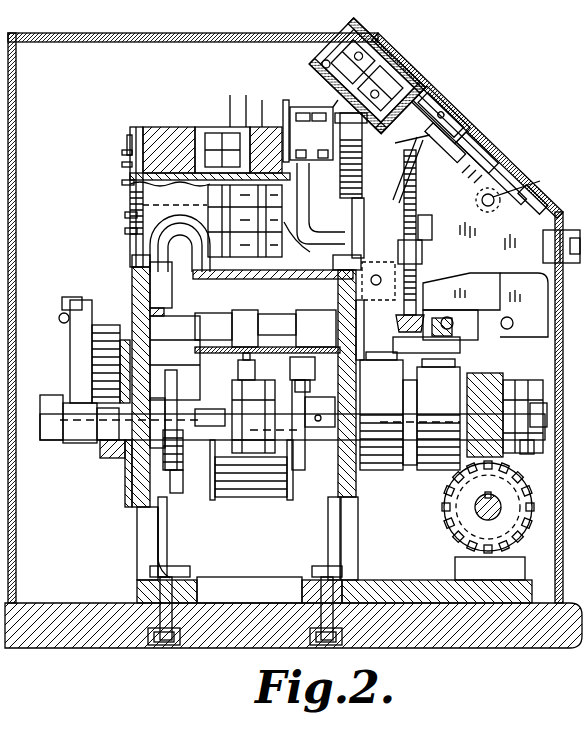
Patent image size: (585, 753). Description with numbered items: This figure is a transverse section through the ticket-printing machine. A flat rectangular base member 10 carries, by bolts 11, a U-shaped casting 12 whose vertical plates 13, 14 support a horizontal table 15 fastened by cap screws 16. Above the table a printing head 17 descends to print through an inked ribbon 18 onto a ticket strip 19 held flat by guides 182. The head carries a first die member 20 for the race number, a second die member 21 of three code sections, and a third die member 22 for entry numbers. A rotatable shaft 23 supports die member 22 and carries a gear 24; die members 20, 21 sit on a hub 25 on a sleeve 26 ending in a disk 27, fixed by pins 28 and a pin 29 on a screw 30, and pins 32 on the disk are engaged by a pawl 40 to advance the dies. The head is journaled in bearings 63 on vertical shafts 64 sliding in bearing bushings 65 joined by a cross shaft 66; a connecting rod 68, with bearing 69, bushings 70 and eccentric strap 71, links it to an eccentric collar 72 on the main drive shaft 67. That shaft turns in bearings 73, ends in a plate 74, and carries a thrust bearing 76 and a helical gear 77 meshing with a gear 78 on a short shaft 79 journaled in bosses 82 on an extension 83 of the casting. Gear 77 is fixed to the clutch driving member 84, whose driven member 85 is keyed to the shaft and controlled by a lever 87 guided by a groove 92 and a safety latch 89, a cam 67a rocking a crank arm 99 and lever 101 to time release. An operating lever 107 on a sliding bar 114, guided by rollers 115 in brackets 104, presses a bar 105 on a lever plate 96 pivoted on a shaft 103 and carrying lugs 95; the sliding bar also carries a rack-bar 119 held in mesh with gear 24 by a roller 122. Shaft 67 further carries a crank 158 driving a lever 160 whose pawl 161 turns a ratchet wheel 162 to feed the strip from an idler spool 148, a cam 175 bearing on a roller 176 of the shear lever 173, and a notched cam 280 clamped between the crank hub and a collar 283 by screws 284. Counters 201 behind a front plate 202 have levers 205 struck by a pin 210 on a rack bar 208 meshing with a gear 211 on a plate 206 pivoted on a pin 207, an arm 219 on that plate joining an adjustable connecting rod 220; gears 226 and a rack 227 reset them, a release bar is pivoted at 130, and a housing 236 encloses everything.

The base member 10 is at (433, 648).
The bolts 11 is at (183, 572).
The U-shaped casting 12 is at (152, 542).
The plate 13 is at (140, 512).
The plate 14 is at (358, 488).
The table 15 is at (132, 268).
The cap screws 16 is at (166, 253).
The printing head 17 is at (302, 110).
The inked ribbon 18 is at (216, 127).
The ticket strip 19 is at (220, 310).
The first die member 20 is at (230, 127).
The second die member 21 is at (262, 127).
The third die member 22 is at (285, 112).
The rotatable shaft 23 is at (140, 187).
The gear 24 is at (338, 196).
The hub 25 is at (176, 145).
The sleeve 26 is at (150, 150).
The disk 27 is at (122, 152).
The pins 28 is at (190, 128).
The pin 29 is at (246, 127).
The screw 30 is at (207, 127).
The pins 32 is at (122, 182).
The pawl 40 is at (128, 136).
The bearings 63 is at (125, 214).
The vertically extending shafts 64 is at (125, 231).
The bearing bushings 65 is at (150, 288).
The cross shaft 66 is at (185, 414).
The main drive shaft 67 is at (561, 408).
The cam 67a is at (300, 478).
The connecting rod 68 is at (234, 368).
The bearing 69 is at (267, 331).
The bushings 70 is at (225, 308).
The eccentric strap 71 is at (253, 416).
The eccentric collar 72 is at (260, 446).
The bearings 73 is at (242, 418).
The plate 74 is at (531, 454).
The thrust bearing 76 is at (516, 389).
The helical gear 77 is at (480, 384).
The gear 78 is at (456, 517).
The short shaft 79 is at (480, 516).
The upright bosses 82 is at (466, 566).
The extension 83 is at (417, 579).
The driving member 84 is at (420, 468).
The driven member 85 is at (374, 470).
The lever 87 is at (415, 351).
The safety latch 89 is at (364, 358).
The groove 92 is at (408, 472).
The lugs 95 is at (452, 314).
The lever plate 96 is at (488, 296).
The crank arm 99 is at (310, 378).
The lever 101 is at (450, 336).
The shaft 103 is at (380, 278).
The brackets 104 is at (506, 243).
The bar 105 is at (470, 278).
The operating lever 107 is at (546, 240).
The sliding bar 114 is at (428, 222).
The rollers 115 is at (362, 238).
The rack-bar 119 is at (318, 135).
The roller 122 is at (340, 102).
The pivot 130 is at (512, 324).
The idler spool 148 is at (241, 500).
The crank 158 is at (78, 452).
The lever 160 is at (70, 340).
The spring-pressed pawl 161 is at (88, 288).
The ratchet wheel 162 is at (92, 360).
The lever 173 is at (178, 492).
The cam 175 is at (178, 400).
The roller 176 is at (167, 506).
The guides 182 is at (150, 310).
The counters 201 is at (406, 64).
The front plate 202 is at (500, 147).
The lever 205 is at (434, 86).
The plate 206 is at (522, 162).
The pin 207 is at (531, 190).
The rack bar 208 is at (464, 112).
The pin 210 is at (450, 102).
The gear 211 is at (482, 136).
The arm 219 is at (410, 146).
The adjustable connecting rod 220 is at (420, 256).
The gears 226 is at (370, 38).
The rack 227 is at (327, 60).
The housing 236 is at (105, 34).
The notched cam 280 is at (100, 454).
The collar 283 is at (110, 460).
The screws 284 is at (48, 442).